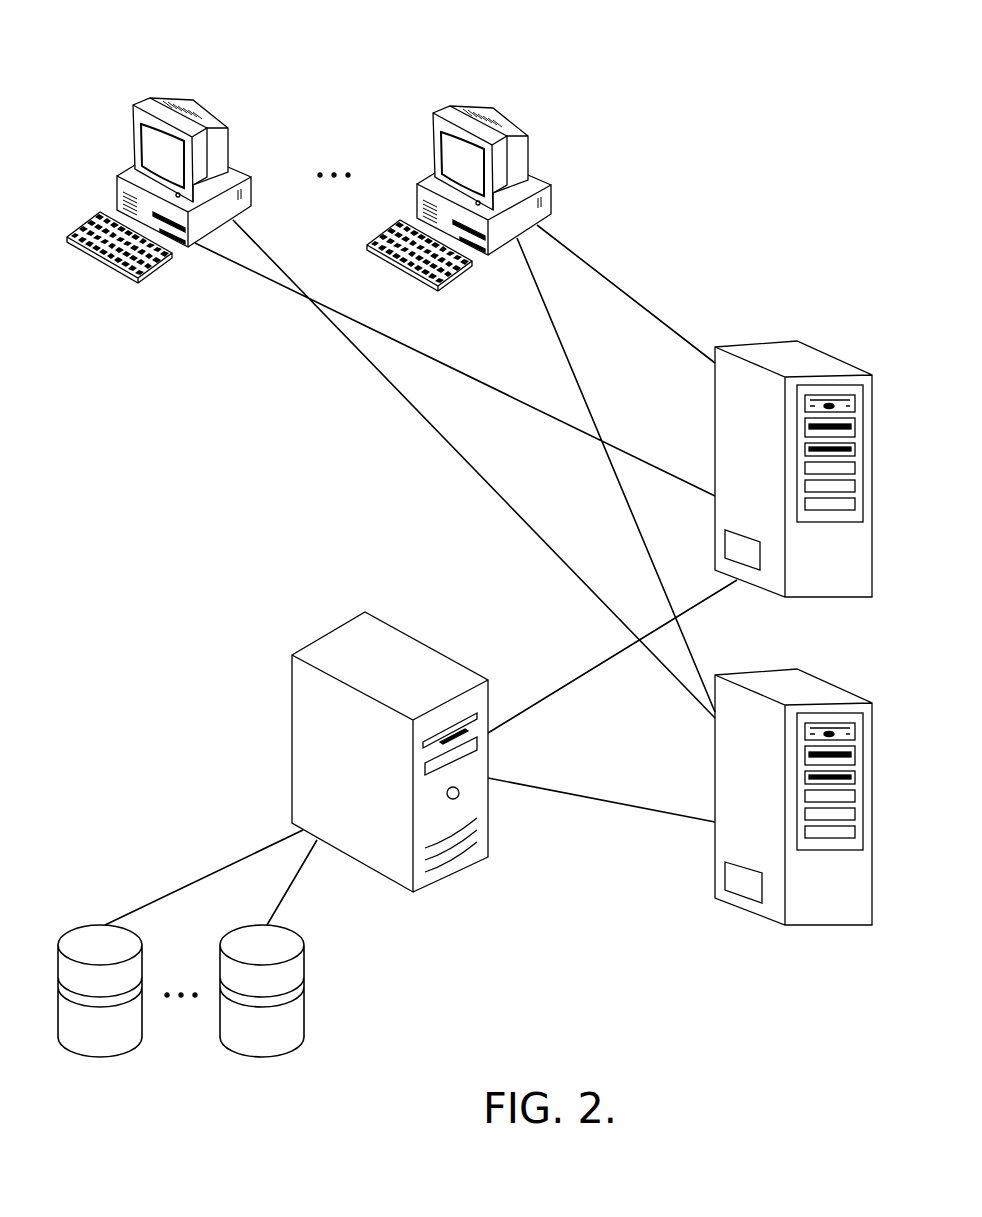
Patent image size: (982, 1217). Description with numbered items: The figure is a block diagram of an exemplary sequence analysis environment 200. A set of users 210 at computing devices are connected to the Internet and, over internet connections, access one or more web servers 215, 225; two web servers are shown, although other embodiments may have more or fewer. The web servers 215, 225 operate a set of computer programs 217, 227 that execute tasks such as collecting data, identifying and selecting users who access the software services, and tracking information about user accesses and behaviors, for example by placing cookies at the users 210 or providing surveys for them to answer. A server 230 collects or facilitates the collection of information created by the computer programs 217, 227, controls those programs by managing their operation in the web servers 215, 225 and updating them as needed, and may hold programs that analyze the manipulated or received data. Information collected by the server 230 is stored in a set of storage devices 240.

The sequence analysis environment 200 is at (797, 180).
The users 210 is at (527, 82).
The web server 215 is at (776, 342).
The computer program 217 is at (740, 530).
The web server 225 is at (776, 672).
The computer program 227 is at (740, 863).
The server 230 is at (424, 641).
The storage devices 240 is at (287, 1120).